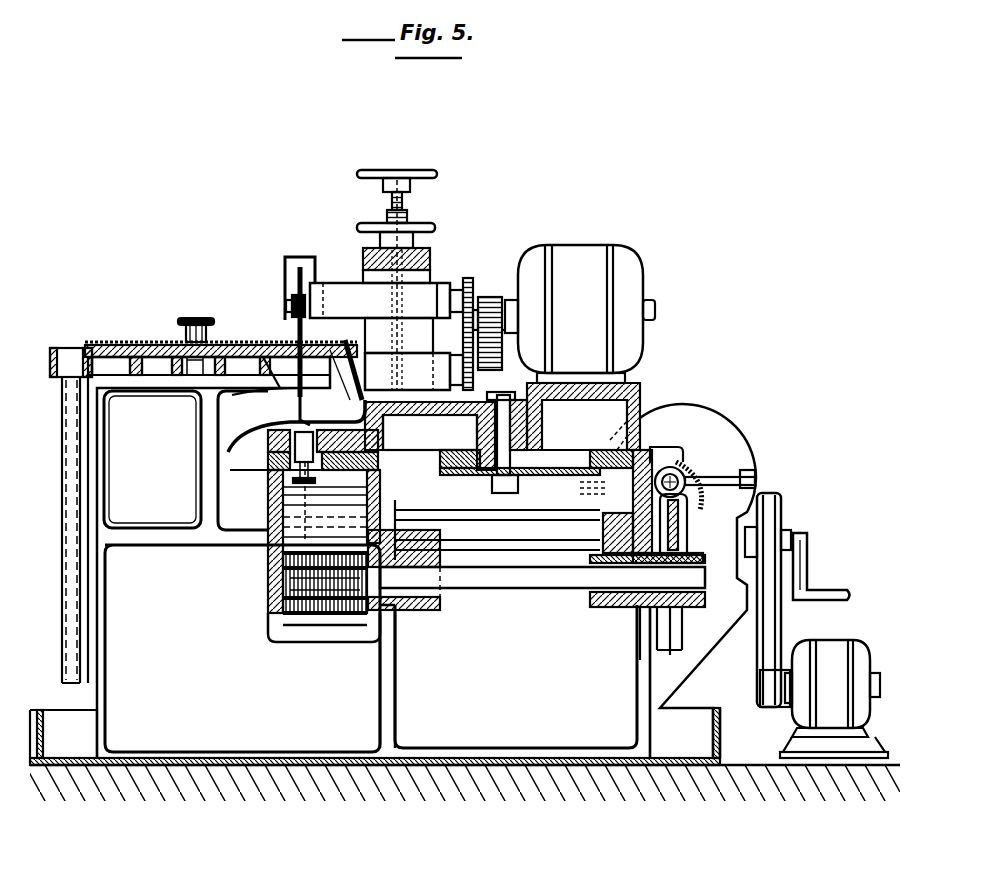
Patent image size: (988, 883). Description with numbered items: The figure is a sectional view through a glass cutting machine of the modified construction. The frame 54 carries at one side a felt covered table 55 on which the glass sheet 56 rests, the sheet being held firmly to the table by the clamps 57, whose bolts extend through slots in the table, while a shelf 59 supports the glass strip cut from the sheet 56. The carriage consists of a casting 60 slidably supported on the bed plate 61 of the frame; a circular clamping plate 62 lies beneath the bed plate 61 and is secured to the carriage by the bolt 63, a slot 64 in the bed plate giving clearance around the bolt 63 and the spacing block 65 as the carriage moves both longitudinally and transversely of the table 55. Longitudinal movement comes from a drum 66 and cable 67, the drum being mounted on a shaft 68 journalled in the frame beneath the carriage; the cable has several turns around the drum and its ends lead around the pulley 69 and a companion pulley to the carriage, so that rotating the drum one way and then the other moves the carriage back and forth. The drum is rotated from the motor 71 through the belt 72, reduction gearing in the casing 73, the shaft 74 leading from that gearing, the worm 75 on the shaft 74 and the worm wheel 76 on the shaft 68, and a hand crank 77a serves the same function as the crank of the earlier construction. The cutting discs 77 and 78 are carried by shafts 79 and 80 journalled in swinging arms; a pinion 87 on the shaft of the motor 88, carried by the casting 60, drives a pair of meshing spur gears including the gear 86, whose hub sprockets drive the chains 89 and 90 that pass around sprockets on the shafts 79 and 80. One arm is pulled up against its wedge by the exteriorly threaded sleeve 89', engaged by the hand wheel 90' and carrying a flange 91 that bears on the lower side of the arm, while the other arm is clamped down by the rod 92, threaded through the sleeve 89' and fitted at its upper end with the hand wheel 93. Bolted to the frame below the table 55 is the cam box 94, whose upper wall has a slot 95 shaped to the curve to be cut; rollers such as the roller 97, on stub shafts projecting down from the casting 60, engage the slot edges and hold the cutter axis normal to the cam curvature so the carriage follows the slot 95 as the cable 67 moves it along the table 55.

The frame 54 is at (95, 695).
The felt covered table 55 is at (78, 348).
The glass sheet 56 is at (125, 342).
The clamps 57 is at (180, 330).
The shelf 59 is at (350, 355).
The casting 60 is at (540, 430).
The bed plate 61 is at (585, 450).
The circular clamping plate 62 is at (545, 476).
The bolt 63 is at (510, 493).
The slot 64 is at (458, 475).
The spacing block 65 is at (455, 446).
The drum 66 is at (268, 606).
The cable 67 is at (312, 488).
The shaft 68 is at (520, 590).
The pulley 69 is at (270, 506).
The motor 71 is at (845, 645).
The belt 72 is at (778, 640).
The casing 73 is at (680, 408).
The shaft 74 is at (700, 470).
The worm 75 is at (690, 460).
The worm wheel 76 is at (685, 520).
The cutting disc 77 is at (296, 263).
The hand crank 77a is at (830, 592).
The cutting disc 78 is at (300, 400).
The shaft 79 is at (292, 298).
The shaft 80 is at (262, 398).
The spur gear 86 is at (505, 370).
The pinion 87 is at (490, 298).
The motor 88 is at (590, 262).
The chain 89 is at (464, 315).
The sleeve 89' is at (424, 285).
The chain 90 is at (430, 432).
The hand wheel 90' is at (425, 233).
The flange 91 is at (390, 318).
The rod 92 is at (390, 200).
The hand wheel 93 is at (425, 172).
The cam box 94 is at (268, 498).
The slot 95 is at (240, 450).
The roller 97 is at (268, 466).